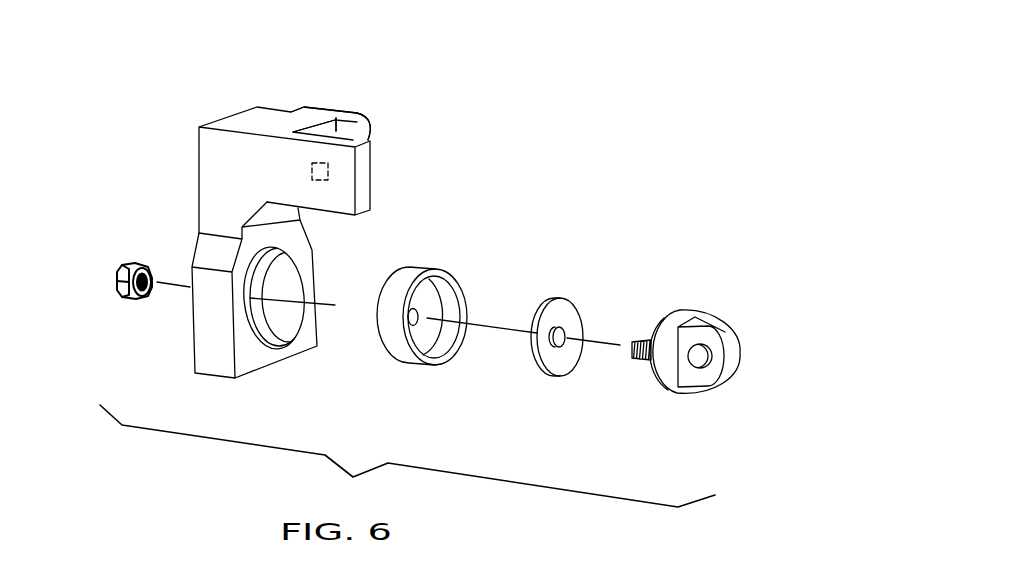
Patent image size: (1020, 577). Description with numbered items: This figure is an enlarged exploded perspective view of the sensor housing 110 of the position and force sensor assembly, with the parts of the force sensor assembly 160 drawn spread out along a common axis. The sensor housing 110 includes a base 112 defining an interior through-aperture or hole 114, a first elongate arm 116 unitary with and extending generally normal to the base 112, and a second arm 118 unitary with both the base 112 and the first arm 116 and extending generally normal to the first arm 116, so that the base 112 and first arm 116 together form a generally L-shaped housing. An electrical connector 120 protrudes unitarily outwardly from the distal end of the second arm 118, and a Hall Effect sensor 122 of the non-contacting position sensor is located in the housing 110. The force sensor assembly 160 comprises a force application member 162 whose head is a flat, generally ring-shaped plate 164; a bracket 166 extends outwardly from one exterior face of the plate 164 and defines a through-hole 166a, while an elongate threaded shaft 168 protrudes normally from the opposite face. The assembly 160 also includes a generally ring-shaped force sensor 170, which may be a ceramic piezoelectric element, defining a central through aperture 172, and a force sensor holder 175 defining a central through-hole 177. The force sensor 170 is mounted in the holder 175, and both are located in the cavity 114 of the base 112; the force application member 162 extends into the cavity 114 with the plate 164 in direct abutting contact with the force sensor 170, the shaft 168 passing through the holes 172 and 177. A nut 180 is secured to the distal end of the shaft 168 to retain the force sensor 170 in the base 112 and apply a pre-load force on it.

The sensor housing 110 is at (196, 157).
The base 112 is at (205, 326).
The through-aperture 114 is at (247, 298).
The first elongate arm 116 is at (327, 195).
The second arm 118 is at (287, 120).
The electrical connector 120 is at (360, 121).
The Hall Effect sensor 122 is at (328, 172).
The force sensor assembly 160 is at (562, 194).
The force application member 162 is at (733, 365).
The plate 164 is at (655, 373).
The bracket 166 is at (727, 343).
The through-hole 166a is at (698, 365).
The threaded shaft 168 is at (641, 339).
The force sensor 170 is at (548, 361).
The central through aperture 172 is at (562, 336).
The force sensor holder 175 is at (401, 352).
The central through-hole 177 is at (418, 317).
The nut 180 is at (119, 267).